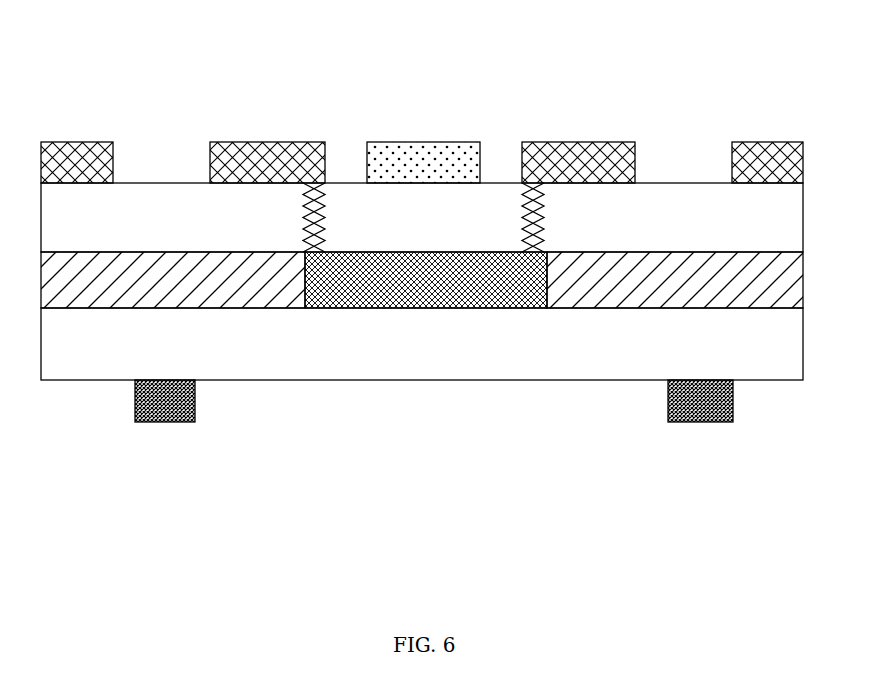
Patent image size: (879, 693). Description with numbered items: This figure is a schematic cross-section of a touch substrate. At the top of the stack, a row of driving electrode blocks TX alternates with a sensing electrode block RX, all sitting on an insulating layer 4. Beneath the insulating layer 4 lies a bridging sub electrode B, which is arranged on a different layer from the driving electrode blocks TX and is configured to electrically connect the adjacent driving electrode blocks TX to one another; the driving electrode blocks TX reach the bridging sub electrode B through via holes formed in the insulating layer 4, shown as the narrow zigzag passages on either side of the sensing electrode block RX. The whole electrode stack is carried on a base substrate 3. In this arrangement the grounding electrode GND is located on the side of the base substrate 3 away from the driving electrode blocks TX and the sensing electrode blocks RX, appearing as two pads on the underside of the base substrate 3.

The base substrate 3 is at (263, 360).
The insulating layer 4 is at (350, 208).
The bridging sub electrode B is at (426, 280).
The driving electrode blocks TX is at (422, 162).
The sensing electrode blocks RX is at (423, 162).
The grounding electrode GND is at (182, 423).